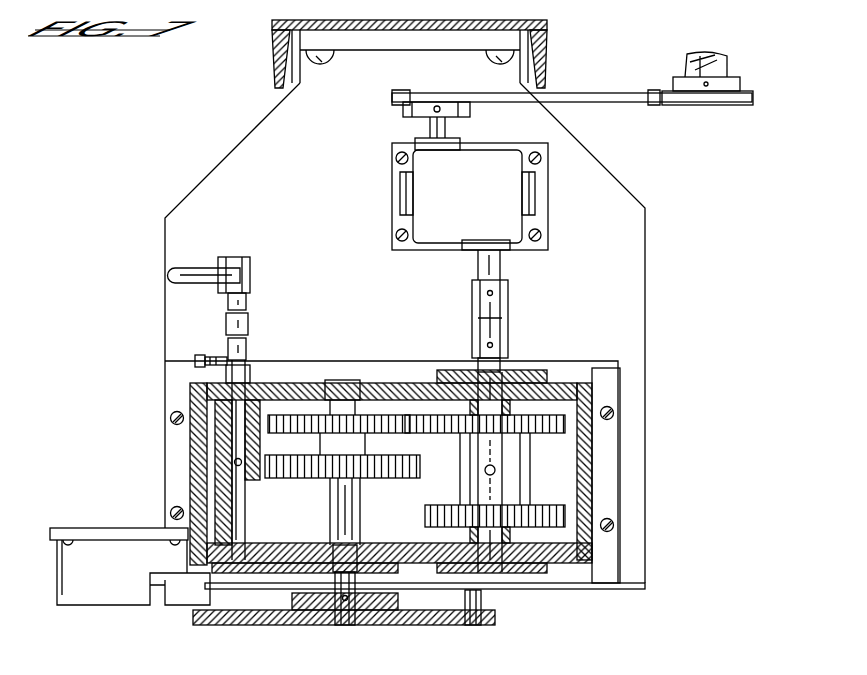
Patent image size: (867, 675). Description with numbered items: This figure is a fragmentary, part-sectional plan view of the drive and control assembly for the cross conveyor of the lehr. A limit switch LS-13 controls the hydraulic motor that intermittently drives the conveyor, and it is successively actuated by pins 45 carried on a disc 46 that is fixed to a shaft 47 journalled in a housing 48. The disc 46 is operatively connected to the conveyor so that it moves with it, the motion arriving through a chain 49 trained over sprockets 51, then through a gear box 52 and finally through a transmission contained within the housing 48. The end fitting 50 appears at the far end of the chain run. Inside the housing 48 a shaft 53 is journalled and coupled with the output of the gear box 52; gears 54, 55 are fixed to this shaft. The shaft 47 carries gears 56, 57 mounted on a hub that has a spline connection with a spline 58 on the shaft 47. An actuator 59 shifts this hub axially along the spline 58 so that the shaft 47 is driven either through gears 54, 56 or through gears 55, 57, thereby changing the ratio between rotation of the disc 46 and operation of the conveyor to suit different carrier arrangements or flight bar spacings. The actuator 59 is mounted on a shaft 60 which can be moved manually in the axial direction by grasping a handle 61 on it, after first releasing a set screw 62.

The pins 45 is at (486, 600).
The disc 46 is at (398, 615).
The shaft 47 is at (345, 625).
The housing 48 is at (585, 472).
The chain 49 is at (622, 102).
The end fitting 50 is at (733, 106).
The sprockets 51 is at (437, 93).
The gear box 52 is at (435, 180).
The shaft 53 is at (505, 378).
The gear 54 is at (550, 415).
The gear 55 is at (553, 528).
The gear 56 is at (316, 400).
The gear 57 is at (300, 478).
The spline 58 is at (358, 522).
The actuator 59 is at (222, 440).
The shaft 60 is at (235, 375).
The handle 61 is at (200, 272).
The set screw 62 is at (200, 358).
The limit switch LS-13 is at (108, 590).